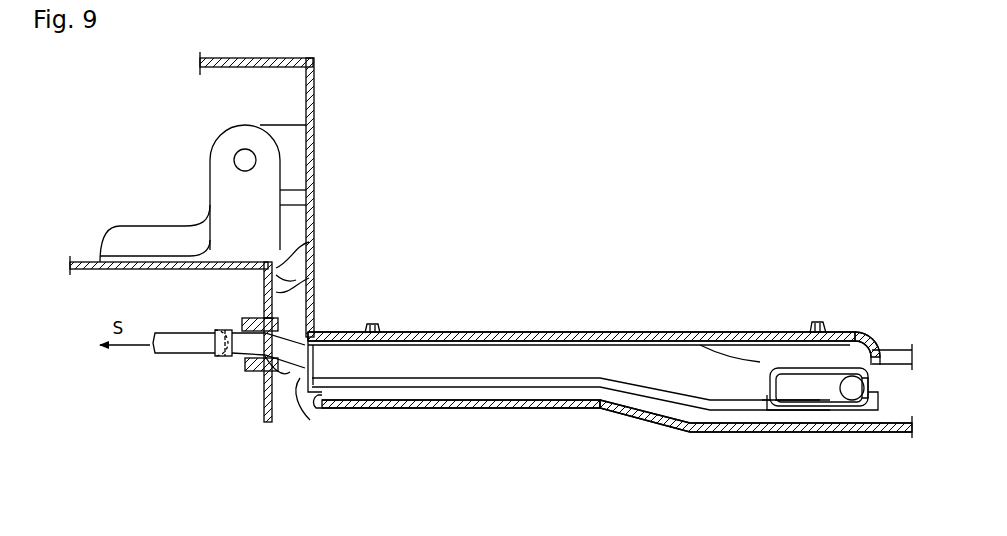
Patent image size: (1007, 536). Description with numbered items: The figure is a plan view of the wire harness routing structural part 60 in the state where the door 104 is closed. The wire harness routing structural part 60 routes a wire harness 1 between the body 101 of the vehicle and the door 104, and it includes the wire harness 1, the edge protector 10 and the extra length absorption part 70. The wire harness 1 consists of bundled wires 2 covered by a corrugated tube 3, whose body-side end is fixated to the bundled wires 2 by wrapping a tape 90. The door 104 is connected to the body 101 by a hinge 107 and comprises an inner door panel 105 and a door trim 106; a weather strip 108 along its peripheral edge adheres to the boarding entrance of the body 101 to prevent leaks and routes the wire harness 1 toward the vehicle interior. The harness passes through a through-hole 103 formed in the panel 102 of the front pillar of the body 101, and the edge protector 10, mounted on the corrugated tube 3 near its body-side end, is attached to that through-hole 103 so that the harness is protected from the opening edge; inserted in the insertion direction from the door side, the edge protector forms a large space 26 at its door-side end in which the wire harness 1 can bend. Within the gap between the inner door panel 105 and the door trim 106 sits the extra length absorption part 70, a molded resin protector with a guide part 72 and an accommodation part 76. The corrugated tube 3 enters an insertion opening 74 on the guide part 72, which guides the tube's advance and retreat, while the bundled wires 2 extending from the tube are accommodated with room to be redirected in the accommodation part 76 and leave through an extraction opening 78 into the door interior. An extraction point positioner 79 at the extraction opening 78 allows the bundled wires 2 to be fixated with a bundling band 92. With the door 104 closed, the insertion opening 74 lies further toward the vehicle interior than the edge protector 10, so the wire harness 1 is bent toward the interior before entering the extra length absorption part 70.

The wire harness 1 is at (294, 336).
The bundled wires 2 is at (166, 357).
The corrugated tube 3 is at (232, 358).
The edge protector 10 is at (254, 374).
The large space 26 is at (285, 395).
The wire harness routing structural part 60 is at (373, 410).
The extra length absorption part 70 is at (569, 386).
The guide part 72 is at (448, 344).
The insertion opening 74 is at (302, 386).
The accommodation part 76 is at (774, 345).
The extraction opening 78 is at (793, 404).
The extraction point positioner 79 is at (856, 372).
The tape 90 is at (215, 330).
The bundling band 92 is at (870, 410).
The body 101 is at (113, 258).
The panel 102 is at (310, 238).
The through-hole 103 is at (253, 318).
The door 104 is at (475, 426).
The inner door panel 105 is at (592, 332).
The door trim 106 is at (656, 436).
The hinge 107 is at (208, 150).
The weather strip 108 is at (311, 266).